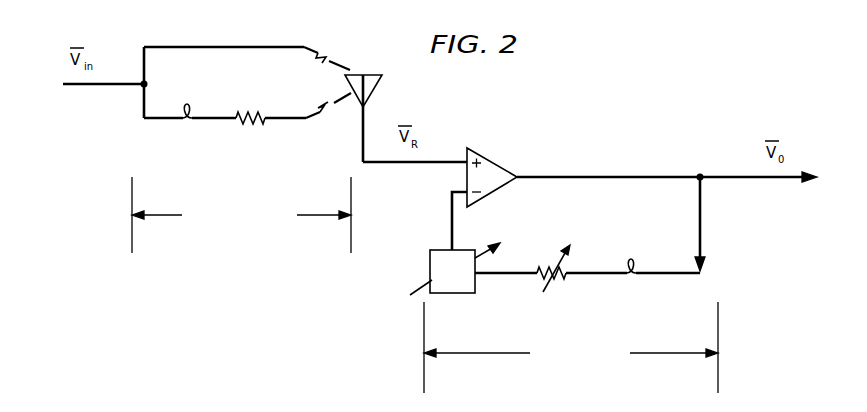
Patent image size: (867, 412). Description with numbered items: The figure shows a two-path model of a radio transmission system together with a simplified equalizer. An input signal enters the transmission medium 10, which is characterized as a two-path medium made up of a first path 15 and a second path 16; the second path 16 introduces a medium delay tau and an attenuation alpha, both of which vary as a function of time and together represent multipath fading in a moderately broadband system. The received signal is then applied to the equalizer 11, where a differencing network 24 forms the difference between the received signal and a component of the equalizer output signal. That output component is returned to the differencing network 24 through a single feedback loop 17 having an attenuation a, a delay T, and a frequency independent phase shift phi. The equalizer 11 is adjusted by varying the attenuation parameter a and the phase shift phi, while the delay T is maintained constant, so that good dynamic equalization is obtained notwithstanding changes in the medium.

The transmission medium 10 is at (241, 161).
The first path 15 is at (277, 46).
The second path 16 is at (297, 118).
The differencing network 24 is at (493, 160).
The feedback loop 17 is at (702, 231).
The equalizer 11 is at (585, 314).